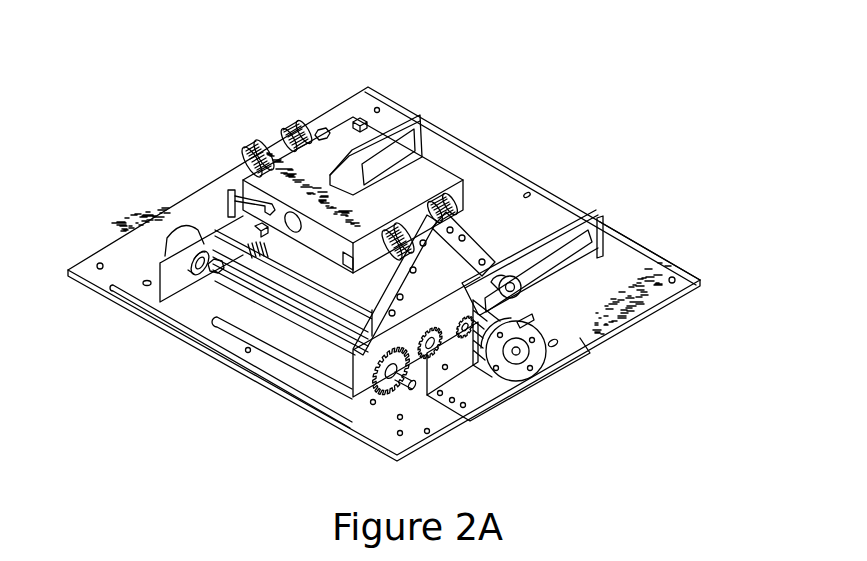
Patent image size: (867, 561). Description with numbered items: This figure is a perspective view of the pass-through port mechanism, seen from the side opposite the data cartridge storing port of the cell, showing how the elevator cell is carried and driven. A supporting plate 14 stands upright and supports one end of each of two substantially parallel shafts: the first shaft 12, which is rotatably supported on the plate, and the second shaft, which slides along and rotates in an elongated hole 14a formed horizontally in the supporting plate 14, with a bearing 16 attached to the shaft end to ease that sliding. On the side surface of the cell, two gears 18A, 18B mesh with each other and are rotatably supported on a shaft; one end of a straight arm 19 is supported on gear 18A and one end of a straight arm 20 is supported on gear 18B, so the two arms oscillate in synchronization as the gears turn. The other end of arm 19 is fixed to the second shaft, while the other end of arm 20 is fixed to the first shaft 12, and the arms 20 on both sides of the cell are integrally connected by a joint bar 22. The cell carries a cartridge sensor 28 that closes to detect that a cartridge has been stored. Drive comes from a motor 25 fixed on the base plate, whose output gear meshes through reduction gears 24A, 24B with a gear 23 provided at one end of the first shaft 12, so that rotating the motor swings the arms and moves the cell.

The first shaft 12 is at (217, 318).
The supporting plate 14 is at (600, 217).
The elongated hole 14a is at (638, 317).
The bearing 16 is at (522, 274).
The gear 18A is at (296, 128).
The gear 18B is at (397, 222).
The arm 19 is at (464, 286).
The arm 20 is at (387, 290).
The joint bar 22 is at (235, 282).
The gear 23 is at (367, 380).
The reduction gear 24A is at (413, 392).
The reduction gear 24B is at (523, 318).
The motor 25 is at (537, 362).
The cartridge sensor 28 is at (233, 190).